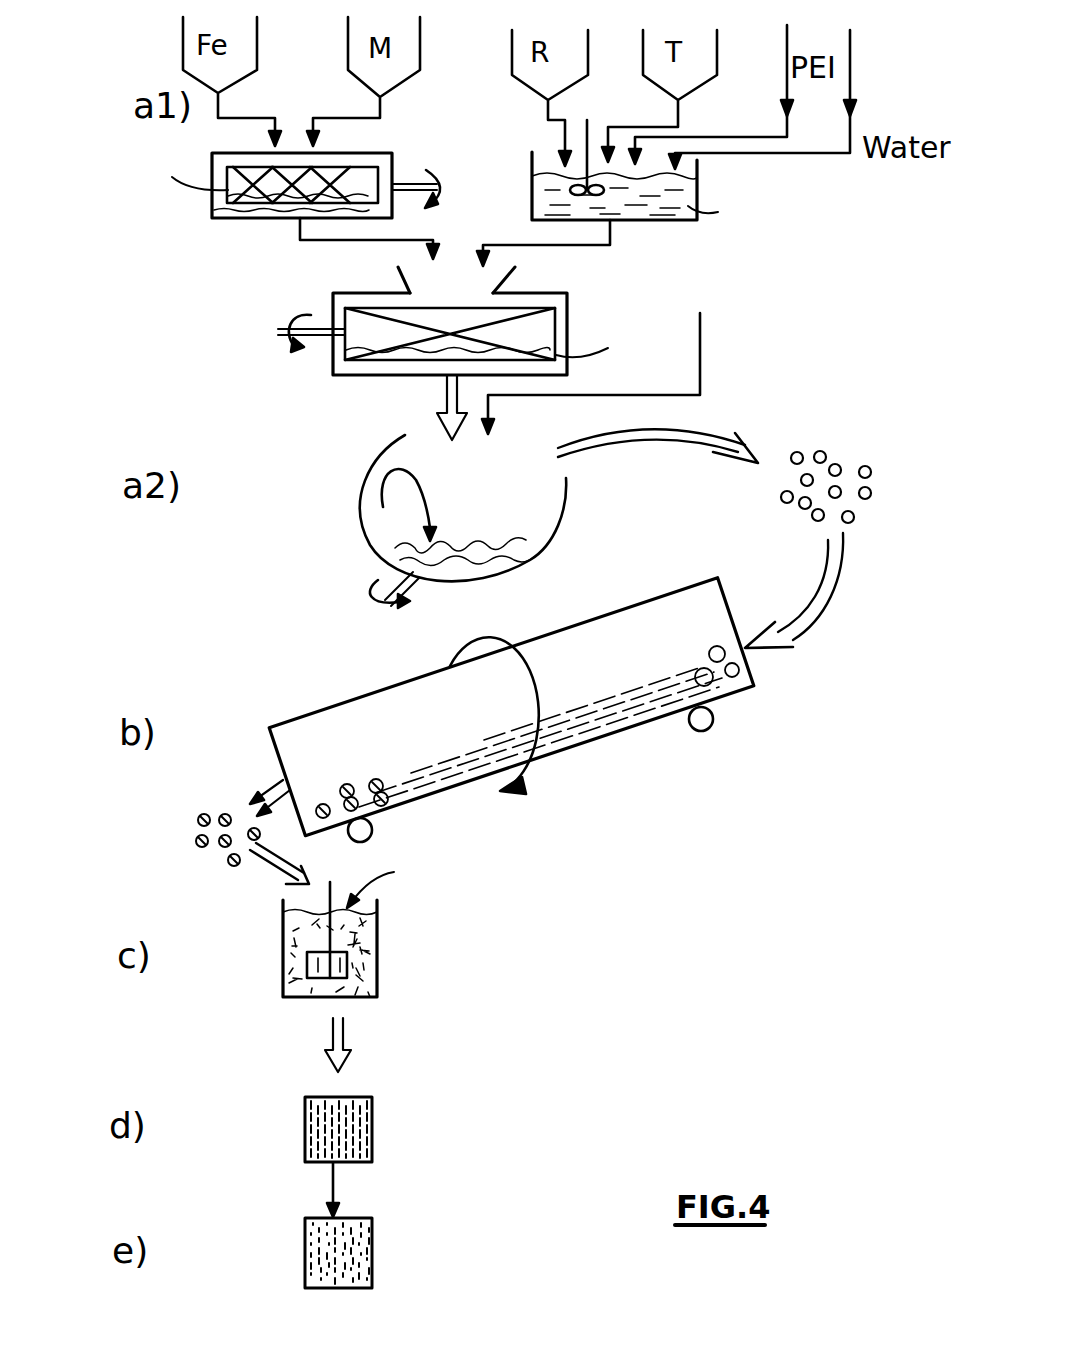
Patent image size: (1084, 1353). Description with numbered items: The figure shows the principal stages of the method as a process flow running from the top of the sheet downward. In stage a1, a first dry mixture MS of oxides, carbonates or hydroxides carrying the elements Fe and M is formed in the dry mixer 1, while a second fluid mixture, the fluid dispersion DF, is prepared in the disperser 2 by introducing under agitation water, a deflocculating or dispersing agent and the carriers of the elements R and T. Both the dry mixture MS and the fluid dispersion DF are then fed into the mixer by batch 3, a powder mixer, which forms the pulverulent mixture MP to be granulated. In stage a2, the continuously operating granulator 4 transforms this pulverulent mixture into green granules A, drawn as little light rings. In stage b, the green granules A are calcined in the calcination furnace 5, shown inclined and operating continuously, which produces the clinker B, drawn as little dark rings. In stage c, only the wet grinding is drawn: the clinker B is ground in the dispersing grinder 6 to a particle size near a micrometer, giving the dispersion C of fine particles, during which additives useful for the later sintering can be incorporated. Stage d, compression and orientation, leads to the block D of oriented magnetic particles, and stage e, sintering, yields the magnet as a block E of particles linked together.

The dry mixer 1 is at (291, 199).
The disperser 2 is at (613, 193).
The mixer by batch 3 is at (562, 353).
The granulator 4 is at (485, 521).
The calcination furnace 5 is at (502, 710).
The dispersing grinder 6 is at (389, 928).
The green granules A is at (848, 477).
The clinker B is at (219, 818).
The dispersion of fine particles C is at (297, 960).
The block of oriented magnetic particles D is at (365, 1129).
The block of linked particles E is at (357, 1253).